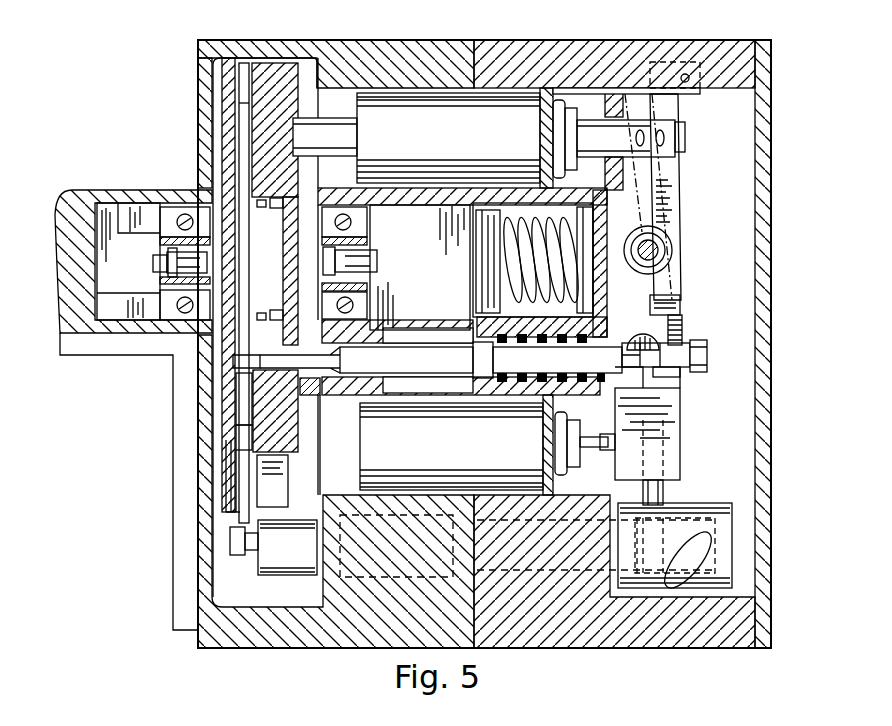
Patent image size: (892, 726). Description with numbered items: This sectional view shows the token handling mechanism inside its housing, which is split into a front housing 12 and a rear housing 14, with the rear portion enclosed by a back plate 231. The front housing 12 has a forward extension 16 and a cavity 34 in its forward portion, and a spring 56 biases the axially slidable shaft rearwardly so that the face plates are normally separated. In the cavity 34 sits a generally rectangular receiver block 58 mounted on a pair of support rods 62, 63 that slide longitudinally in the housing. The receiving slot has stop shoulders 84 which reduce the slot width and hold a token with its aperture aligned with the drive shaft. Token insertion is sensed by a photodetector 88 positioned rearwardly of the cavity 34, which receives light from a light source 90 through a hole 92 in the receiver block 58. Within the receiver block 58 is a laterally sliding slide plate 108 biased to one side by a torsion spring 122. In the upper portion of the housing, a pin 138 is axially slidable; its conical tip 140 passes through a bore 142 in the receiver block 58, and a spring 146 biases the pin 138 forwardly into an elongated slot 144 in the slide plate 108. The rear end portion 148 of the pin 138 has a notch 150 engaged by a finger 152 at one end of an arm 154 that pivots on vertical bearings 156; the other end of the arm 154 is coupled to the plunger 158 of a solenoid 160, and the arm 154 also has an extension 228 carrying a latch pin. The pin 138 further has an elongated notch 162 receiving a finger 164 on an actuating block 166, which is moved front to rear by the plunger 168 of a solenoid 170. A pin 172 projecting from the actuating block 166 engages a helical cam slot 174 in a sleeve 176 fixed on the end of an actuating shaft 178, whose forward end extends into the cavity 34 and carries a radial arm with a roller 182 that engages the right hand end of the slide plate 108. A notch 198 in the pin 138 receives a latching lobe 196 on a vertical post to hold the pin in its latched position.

The front housing 12 is at (273, 640).
The rear housing 14 is at (628, 638).
The forward extension 16 is at (110, 335).
The cavity 34 is at (222, 578).
The spring 56 is at (510, 250).
The receiver block 58 is at (282, 65).
The support rod 62 is at (308, 397).
The support rod 63 is at (306, 138).
The stop shoulders 84 is at (277, 208).
The photodetector 88 is at (153, 262).
The light source 90 is at (372, 258).
The hole 92 is at (302, 245).
The slide plate 108 is at (245, 440).
The torsion spring 122 is at (232, 480).
The pin 138 is at (432, 368).
The conical tip 140 is at (233, 360).
The bore 142 is at (304, 418).
The elongated slot 144 is at (244, 388).
The spring 146 is at (513, 385).
The rear end portion 148 is at (700, 357).
The notch 150 is at (690, 338).
The finger 152 is at (680, 320).
The arm 154 is at (672, 178).
The vertical bearings 156 is at (666, 238).
The plunger 158 is at (688, 136).
The solenoid 160 is at (450, 110).
The elongated notch 162 is at (636, 370).
The finger 164 is at (662, 372).
The actuating block 166 is at (674, 442).
The plunger 168 is at (592, 452).
The solenoid 170 is at (441, 470).
The pin 172 is at (672, 486).
The helical cam slot 174 is at (680, 580).
The sleeve 176 is at (690, 507).
The actuating shaft 178 is at (541, 577).
The roller 182 is at (230, 535).
The latching lobe 196 is at (670, 302).
The notch 198 is at (628, 330).
The extension 228 is at (694, 96).
The back plate 231 is at (757, 42).